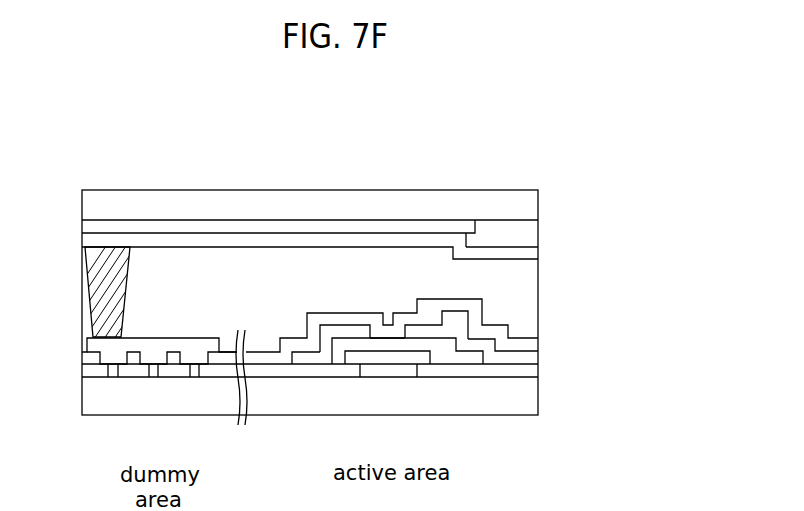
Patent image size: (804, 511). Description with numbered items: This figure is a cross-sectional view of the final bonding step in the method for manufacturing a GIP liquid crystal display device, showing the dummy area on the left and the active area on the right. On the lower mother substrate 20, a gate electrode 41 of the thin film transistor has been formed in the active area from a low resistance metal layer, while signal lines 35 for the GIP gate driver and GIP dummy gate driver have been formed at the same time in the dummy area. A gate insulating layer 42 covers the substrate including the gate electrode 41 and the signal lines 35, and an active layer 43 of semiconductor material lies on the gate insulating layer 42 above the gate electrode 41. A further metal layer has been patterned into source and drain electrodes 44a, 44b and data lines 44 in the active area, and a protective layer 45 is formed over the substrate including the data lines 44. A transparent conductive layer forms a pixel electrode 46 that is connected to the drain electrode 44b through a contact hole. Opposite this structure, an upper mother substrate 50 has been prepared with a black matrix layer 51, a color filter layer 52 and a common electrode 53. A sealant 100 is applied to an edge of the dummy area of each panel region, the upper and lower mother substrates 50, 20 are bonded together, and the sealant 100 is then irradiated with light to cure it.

The lower mother substrate 20 is at (532, 400).
The signal lines 35 is at (155, 378).
The gate electrode 41 is at (387, 372).
The gate insulating layer 42 is at (532, 371).
The active layer 43 is at (437, 360).
The data lines 44 is at (313, 358).
The source electrode 44a is at (357, 332).
The drain electrode 44b is at (433, 332).
The protective layer 45 is at (532, 357).
The pixel electrode 46 is at (532, 343).
The upper mother substrate 50 is at (472, 202).
The black matrix layer 51 is at (373, 225).
The color filter layer 52 is at (532, 233).
The common electrode 53 is at (532, 252).
The sealant 100 is at (128, 290).